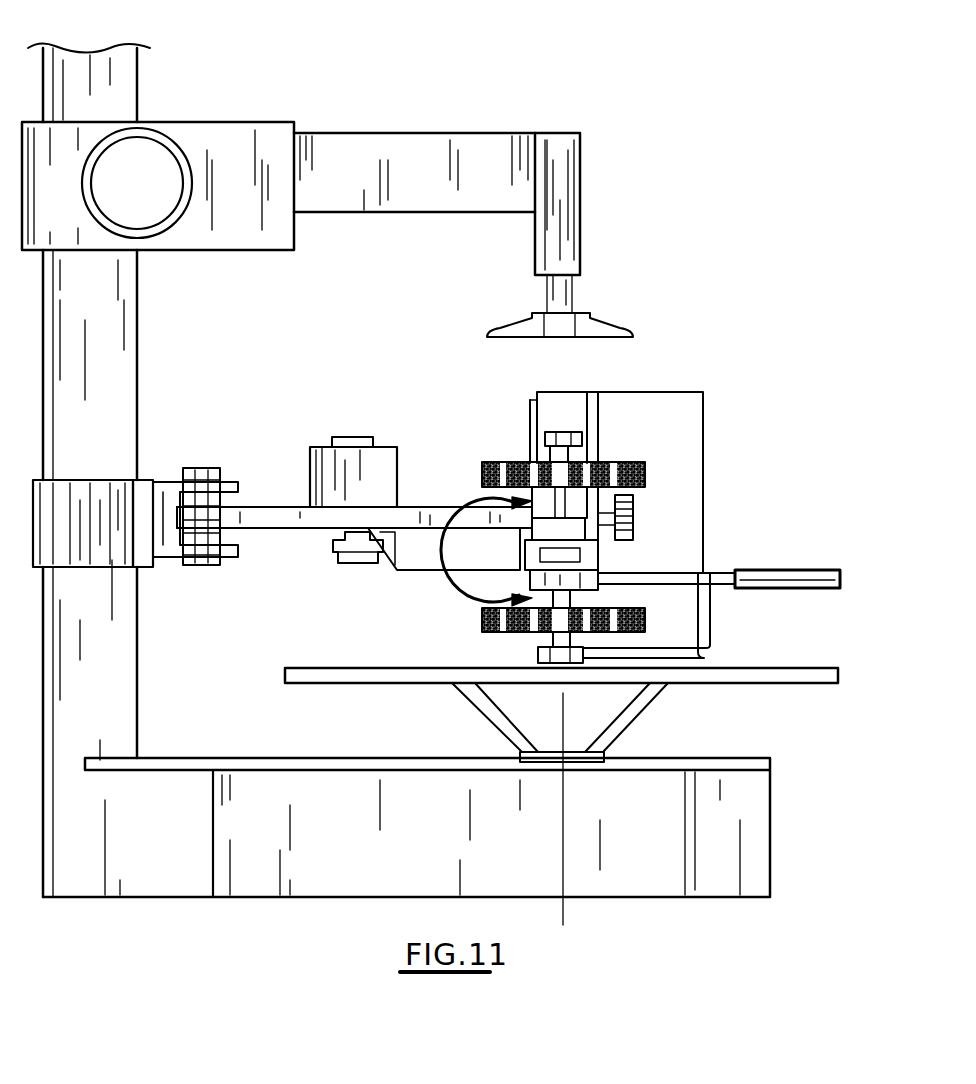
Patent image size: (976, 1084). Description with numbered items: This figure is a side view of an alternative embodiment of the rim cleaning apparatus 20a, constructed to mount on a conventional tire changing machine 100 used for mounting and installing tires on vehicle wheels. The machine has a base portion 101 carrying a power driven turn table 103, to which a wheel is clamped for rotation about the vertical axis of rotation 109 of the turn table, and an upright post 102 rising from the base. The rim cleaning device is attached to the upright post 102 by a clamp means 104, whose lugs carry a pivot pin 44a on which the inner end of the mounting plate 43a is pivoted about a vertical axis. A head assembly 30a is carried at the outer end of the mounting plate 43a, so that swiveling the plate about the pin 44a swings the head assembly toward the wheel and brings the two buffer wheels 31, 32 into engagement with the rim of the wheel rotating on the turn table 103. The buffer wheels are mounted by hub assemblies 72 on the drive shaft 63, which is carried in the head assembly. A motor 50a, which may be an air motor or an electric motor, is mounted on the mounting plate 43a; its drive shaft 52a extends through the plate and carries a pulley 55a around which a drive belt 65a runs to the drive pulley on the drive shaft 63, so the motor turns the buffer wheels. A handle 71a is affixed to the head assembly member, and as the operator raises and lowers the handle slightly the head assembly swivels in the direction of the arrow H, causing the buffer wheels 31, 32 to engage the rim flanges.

The tire changing machine 100 is at (312, 106).
The base portion 101 is at (765, 836).
The upright post 102 is at (138, 352).
The turn table 103 is at (758, 675).
The clamp means 104 is at (143, 480).
The vertical axis of rotation 109 is at (565, 918).
The rim cleaning apparatus 20a is at (642, 378).
The head assembly 30a is at (672, 502).
The buffer wheel 31 is at (645, 462).
The buffer wheel 32 is at (647, 628).
The mounting plate 43a is at (288, 518).
The pivot pin 44a is at (204, 470).
The motor 50a is at (385, 455).
The drive shaft 52a is at (335, 540).
The pulley 55a is at (350, 565).
The drive shaft 63 is at (560, 503).
The drive belt 65a is at (395, 572).
The handle 71a is at (823, 567).
The hub assembly 72 is at (563, 432).
The arrow H is at (483, 567).